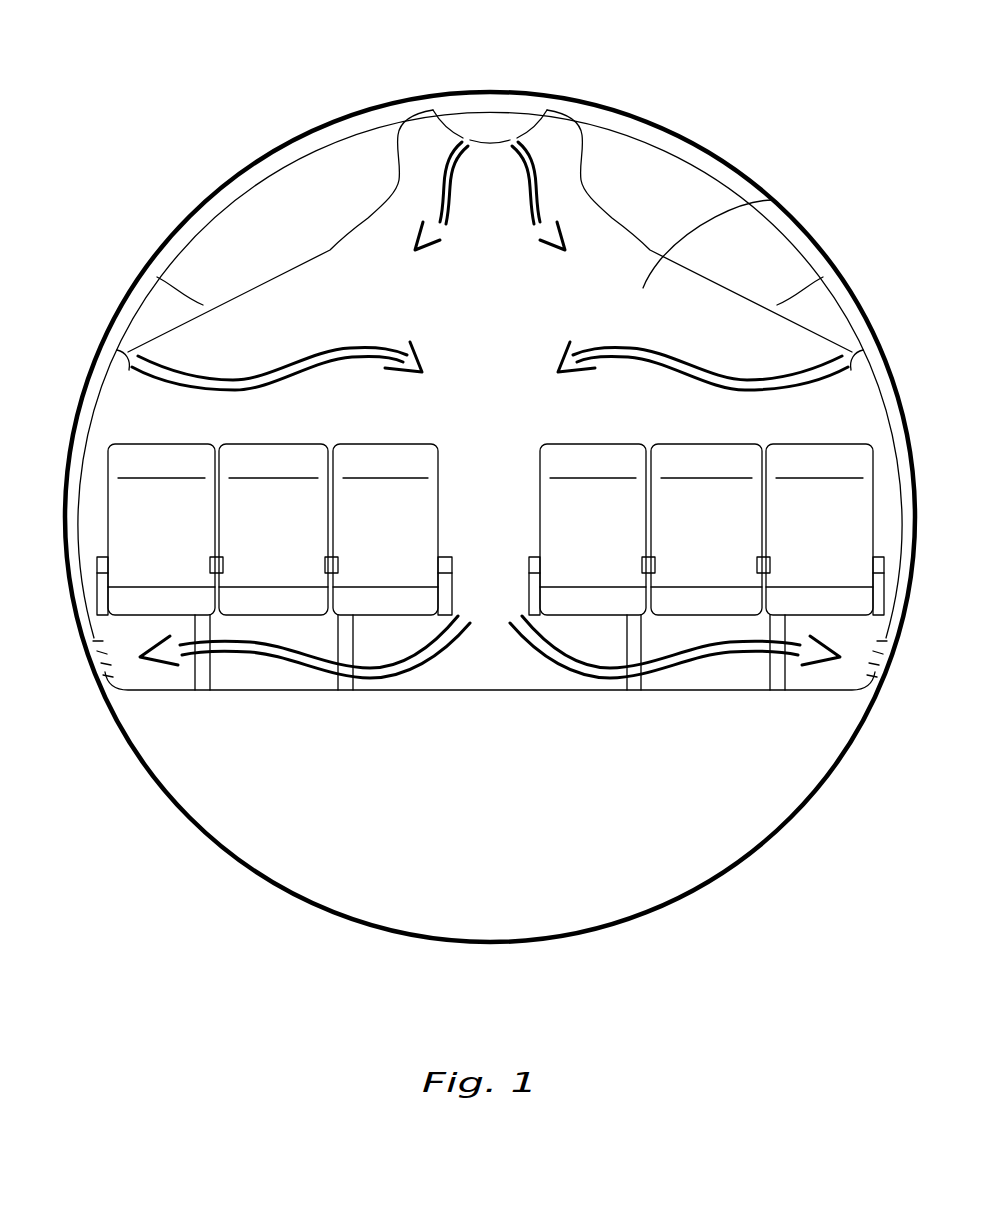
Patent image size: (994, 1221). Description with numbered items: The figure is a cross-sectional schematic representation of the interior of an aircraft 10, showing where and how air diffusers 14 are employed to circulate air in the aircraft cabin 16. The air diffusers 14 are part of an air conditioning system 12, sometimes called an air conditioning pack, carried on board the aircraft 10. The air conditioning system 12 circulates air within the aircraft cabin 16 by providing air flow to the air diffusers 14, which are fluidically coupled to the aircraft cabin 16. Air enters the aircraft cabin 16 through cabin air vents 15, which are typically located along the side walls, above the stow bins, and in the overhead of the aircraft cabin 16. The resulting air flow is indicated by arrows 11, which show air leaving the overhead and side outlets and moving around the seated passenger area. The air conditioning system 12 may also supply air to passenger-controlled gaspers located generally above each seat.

The aircraft 10 is at (150, 55).
The arrows 11 is at (443, 206).
The air conditioning system 12 is at (135, 187).
The air diffuser 14 is at (492, 125).
The cabin air vents 15 is at (487, 145).
The aircraft cabin 16 is at (773, 200).